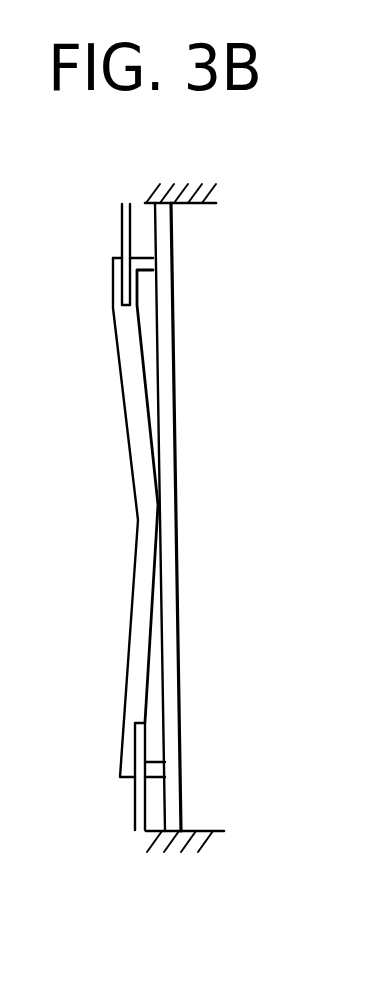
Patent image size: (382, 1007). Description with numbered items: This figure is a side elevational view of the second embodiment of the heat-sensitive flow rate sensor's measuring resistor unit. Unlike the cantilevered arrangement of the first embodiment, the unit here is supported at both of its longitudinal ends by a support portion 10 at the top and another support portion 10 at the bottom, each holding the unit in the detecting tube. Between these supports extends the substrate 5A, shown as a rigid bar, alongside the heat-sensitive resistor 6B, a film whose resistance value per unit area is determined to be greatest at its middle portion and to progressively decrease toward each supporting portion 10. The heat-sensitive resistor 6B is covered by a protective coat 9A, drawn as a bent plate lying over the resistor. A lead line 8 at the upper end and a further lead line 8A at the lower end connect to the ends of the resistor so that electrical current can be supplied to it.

The support portion 10 is at (212, 193).
The lead line 8 is at (122, 230).
The lower pin 8A is at (135, 813).
The protective coat 9A is at (133, 415).
The heat-sensitive resistor 6B is at (147, 333).
The rigid bar 5A is at (172, 685).